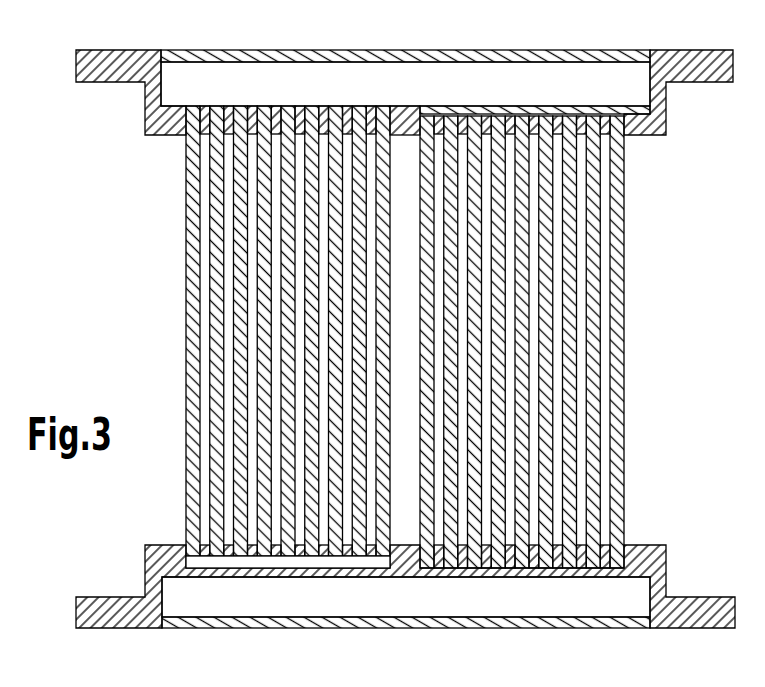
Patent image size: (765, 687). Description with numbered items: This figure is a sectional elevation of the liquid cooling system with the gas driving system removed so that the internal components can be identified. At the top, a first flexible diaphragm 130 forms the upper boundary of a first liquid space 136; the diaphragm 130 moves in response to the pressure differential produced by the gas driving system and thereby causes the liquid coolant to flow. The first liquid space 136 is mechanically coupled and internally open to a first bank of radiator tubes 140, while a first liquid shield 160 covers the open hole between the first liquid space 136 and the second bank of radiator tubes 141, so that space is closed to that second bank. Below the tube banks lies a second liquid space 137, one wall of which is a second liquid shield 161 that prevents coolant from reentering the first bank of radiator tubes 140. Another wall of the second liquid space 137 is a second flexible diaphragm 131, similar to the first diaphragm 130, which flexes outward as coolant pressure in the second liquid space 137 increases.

The first flexible diaphragm 130 is at (548, 55).
The second flexible diaphragm 131 is at (313, 625).
The first liquid space 136 is at (318, 75).
The second liquid space 137 is at (535, 607).
The first bank of radiator tubes 140 is at (268, 323).
The second bank of radiator tubes 141 is at (545, 302).
The first liquid shield 160 is at (480, 105).
The second liquid shield 161 is at (267, 572).